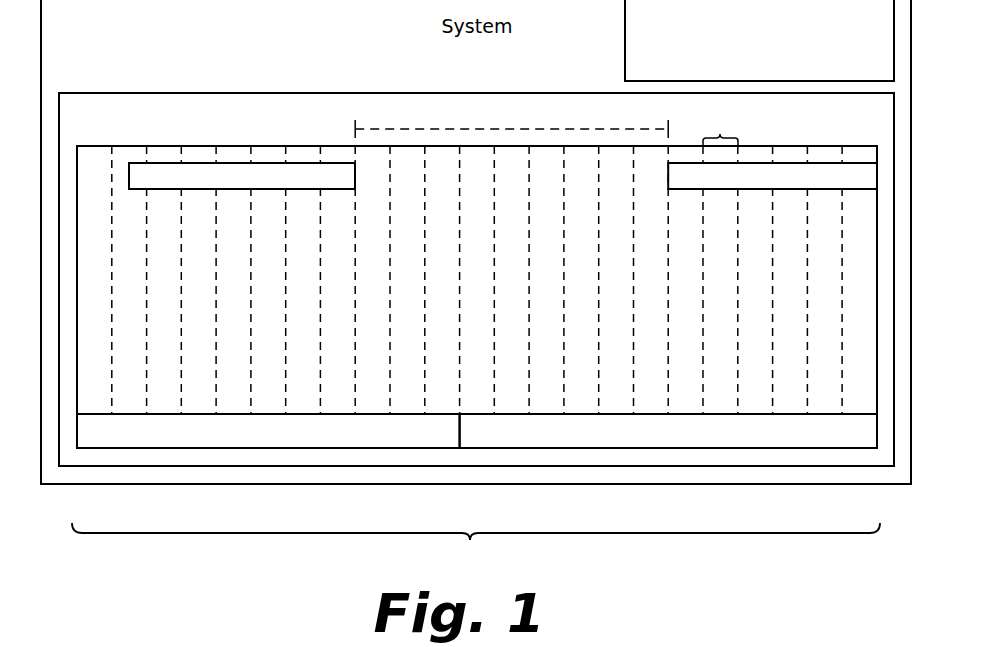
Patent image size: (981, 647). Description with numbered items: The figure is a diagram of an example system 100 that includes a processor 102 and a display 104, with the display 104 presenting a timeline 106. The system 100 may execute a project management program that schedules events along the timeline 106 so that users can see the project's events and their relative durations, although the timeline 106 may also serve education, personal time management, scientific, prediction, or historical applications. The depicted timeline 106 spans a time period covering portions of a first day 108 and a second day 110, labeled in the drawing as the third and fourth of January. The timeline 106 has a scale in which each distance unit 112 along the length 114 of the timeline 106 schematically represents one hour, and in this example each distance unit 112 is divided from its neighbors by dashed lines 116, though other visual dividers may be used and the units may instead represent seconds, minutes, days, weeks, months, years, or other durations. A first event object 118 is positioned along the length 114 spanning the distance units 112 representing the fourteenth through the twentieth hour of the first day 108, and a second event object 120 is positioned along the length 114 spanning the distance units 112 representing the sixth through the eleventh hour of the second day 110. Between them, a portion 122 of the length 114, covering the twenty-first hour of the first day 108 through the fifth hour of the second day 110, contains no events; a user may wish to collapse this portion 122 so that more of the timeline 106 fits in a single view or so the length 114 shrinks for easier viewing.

The system 100 is at (97, 41).
The processor 102 is at (682, 59).
The display 104 is at (168, 132).
The timeline 106 is at (130, 452).
The first day 108 is at (203, 436).
The second day 110 is at (559, 436).
The distance unit 112 is at (719, 127).
The length 114 is at (476, 546).
The dashed lines 116 is at (704, 373).
The first event object 118 is at (305, 181).
The second event object 120 is at (858, 182).
The portion 122 is at (575, 128).